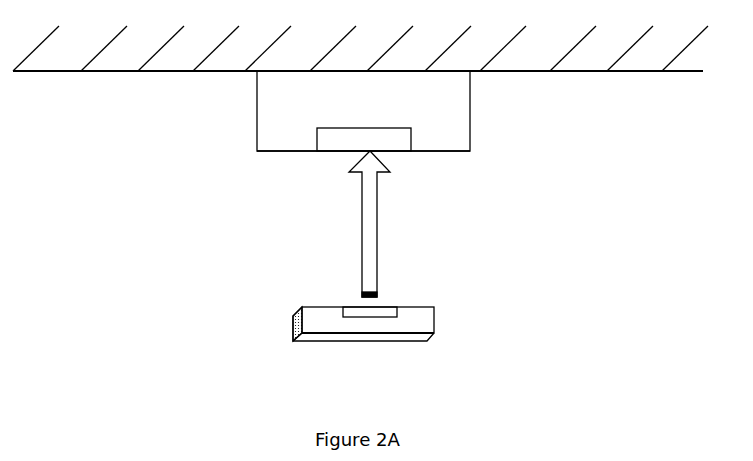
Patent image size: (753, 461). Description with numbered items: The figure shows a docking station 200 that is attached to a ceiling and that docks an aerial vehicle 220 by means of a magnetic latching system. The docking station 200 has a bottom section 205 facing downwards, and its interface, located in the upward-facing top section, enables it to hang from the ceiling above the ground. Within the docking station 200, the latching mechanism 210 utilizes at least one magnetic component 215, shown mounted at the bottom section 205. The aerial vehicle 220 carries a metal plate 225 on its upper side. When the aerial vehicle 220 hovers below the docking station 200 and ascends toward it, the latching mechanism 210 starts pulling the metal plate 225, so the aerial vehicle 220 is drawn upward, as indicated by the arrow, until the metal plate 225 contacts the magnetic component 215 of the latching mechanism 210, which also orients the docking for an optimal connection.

The docking station 200 is at (282, 107).
The bottom section 205 is at (292, 151).
The magnetic component 215 is at (378, 142).
The latching mechanism 210 is at (412, 180).
The aerial vehicle 220 is at (293, 341).
The metal plate 225 is at (387, 312).